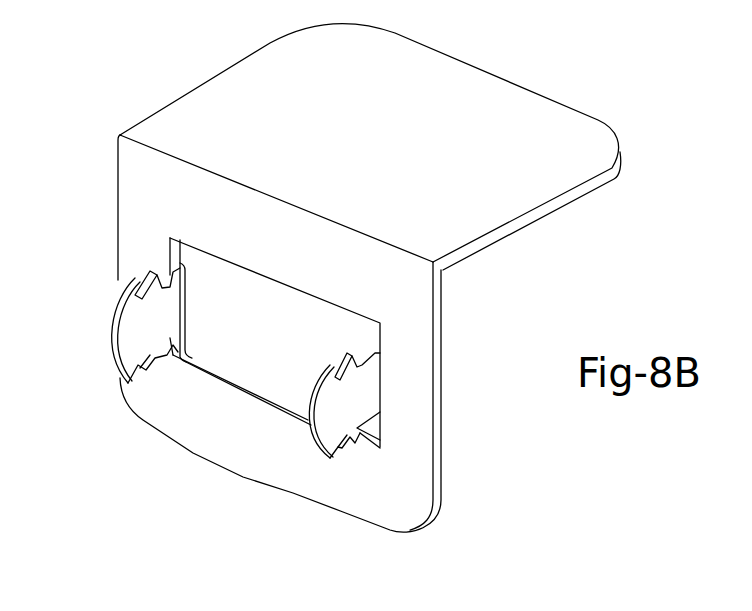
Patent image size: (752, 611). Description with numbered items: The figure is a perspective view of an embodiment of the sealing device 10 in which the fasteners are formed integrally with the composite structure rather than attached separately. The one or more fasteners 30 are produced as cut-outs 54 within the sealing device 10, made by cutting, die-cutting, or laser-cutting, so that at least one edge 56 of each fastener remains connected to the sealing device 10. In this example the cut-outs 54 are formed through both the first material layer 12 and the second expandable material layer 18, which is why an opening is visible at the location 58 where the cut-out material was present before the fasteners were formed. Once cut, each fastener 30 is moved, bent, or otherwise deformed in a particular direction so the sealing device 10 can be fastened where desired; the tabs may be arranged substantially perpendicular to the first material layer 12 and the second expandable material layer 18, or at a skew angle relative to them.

The sealing device 10 is at (294, 249).
The first material layer 12 is at (387, 141).
The second expandable material layer 18 is at (519, 224).
The fastener 30 is at (150, 340).
The cut-out 54 is at (110, 345).
The edge 56 is at (193, 300).
The location 58 is at (277, 368).